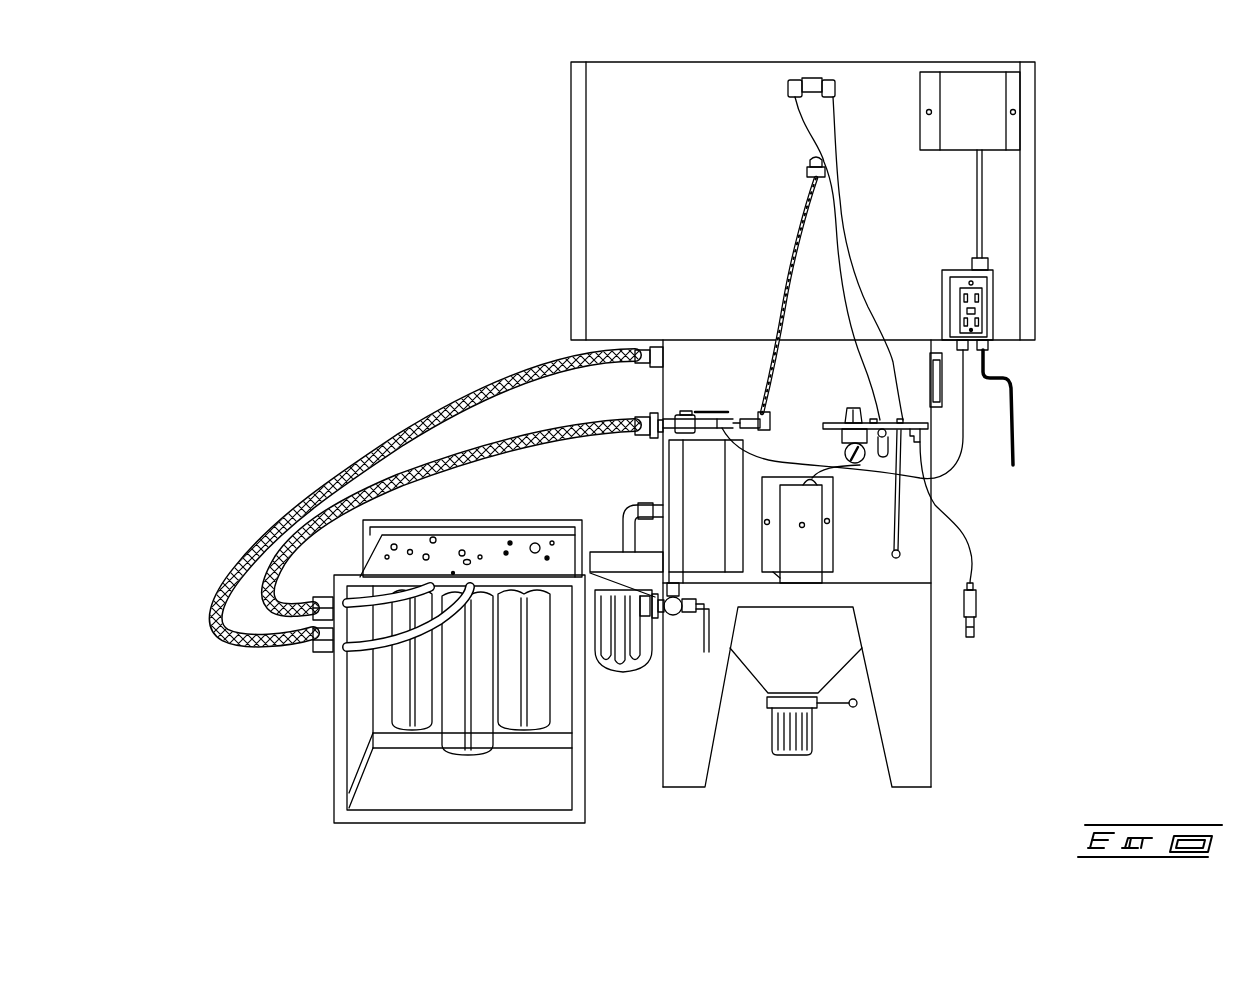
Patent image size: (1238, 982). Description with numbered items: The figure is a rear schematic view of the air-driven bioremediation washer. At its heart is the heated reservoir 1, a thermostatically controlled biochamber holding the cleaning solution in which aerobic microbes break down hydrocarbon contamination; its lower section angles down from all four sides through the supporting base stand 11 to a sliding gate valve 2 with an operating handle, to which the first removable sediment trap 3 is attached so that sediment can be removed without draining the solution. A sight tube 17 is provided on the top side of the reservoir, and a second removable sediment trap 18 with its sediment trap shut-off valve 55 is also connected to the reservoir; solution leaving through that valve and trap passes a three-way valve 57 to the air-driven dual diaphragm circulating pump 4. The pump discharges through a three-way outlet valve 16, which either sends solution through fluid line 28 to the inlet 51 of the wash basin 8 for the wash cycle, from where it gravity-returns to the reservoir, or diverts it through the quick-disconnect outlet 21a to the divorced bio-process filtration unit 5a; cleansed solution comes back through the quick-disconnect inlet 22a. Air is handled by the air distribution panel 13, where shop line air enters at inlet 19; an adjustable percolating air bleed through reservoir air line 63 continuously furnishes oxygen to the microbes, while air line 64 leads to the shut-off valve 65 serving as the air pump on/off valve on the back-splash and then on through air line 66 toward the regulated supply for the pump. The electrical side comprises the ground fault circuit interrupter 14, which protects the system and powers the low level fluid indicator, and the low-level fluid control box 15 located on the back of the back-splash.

The heated reservoir 1 is at (912, 557).
The sliding gate valve 2 is at (832, 706).
The first removable sediment trap 3 is at (790, 757).
The air-driven dual diaphragm circulating pump 4 is at (716, 504).
The bio-process filtration unit 5a is at (455, 823).
The wash basin 8 is at (654, 278).
The supporting base stand 11 is at (918, 728).
The air distribution panel 13 is at (889, 420).
The ground fault circuit interrupter 14 is at (985, 310).
The low-level fluid control box 15 is at (953, 116).
The three-way outlet valve 16 is at (714, 410).
The sight tube 17 is at (941, 377).
The second removable sediment trap 18 is at (614, 673).
The inlet 19 is at (978, 633).
The quick-disconnect outlet 21a is at (643, 440).
The quick-disconnect inlet 22a is at (643, 368).
The fluid line 28 is at (788, 260).
The inlet 51 is at (806, 171).
The sediment trap shut-off valve 55 is at (622, 533).
The three-way valve 57 is at (678, 616).
The reservoir air line 63 is at (894, 515).
The air line 64 is at (846, 213).
The shut-off valve 65 is at (816, 77).
The air line 66 is at (803, 125).